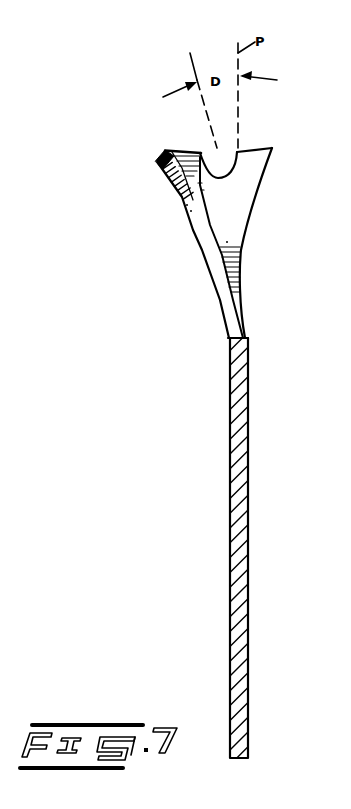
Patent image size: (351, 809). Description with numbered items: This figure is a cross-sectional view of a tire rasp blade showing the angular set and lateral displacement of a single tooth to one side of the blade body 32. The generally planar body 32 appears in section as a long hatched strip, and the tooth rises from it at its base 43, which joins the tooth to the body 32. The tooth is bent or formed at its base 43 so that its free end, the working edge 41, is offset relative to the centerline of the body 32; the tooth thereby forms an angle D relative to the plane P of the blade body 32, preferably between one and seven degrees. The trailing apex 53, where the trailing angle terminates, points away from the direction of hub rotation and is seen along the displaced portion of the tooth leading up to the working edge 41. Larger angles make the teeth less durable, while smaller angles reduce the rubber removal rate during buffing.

The working edge 41 is at (173, 151).
The trailing apex 53 is at (159, 172).
The base 43 is at (229, 337).
The body 32 is at (250, 425).